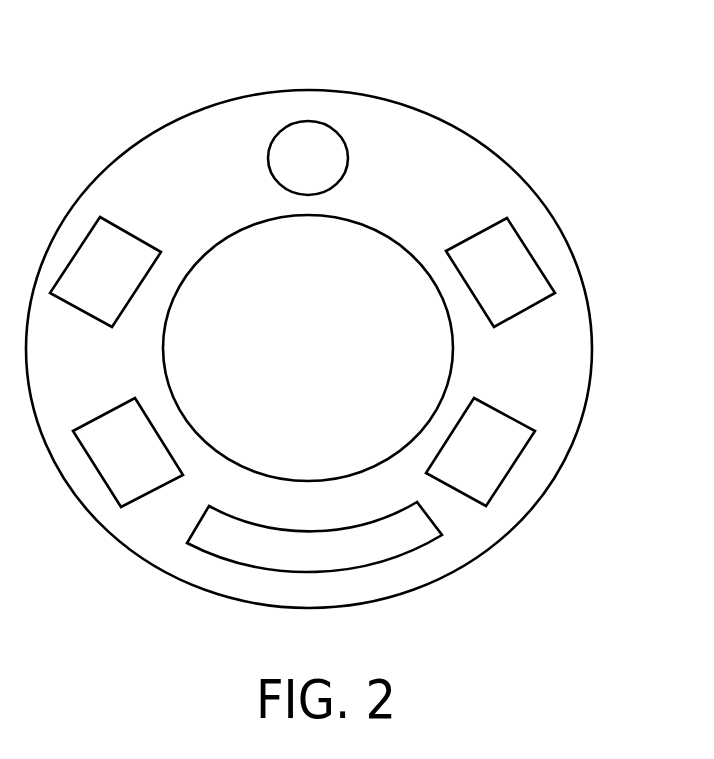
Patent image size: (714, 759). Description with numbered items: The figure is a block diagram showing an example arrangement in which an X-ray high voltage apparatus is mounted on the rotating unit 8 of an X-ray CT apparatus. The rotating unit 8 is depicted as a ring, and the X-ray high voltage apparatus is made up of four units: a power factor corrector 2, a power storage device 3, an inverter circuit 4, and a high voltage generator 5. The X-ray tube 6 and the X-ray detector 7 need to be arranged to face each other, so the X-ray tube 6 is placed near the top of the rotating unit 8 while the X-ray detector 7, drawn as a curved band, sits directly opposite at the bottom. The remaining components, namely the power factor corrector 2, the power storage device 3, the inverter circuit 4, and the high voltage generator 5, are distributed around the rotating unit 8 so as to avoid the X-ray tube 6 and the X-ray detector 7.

The power factor corrector 2 is at (515, 420).
The power storage device 3 is at (466, 240).
The inverter circuit 4 is at (133, 236).
The high voltage generator 5 is at (96, 419).
The X-ray tube 6 is at (349, 156).
The X-ray detector 7 is at (313, 530).
The rotating unit 8 is at (413, 107).